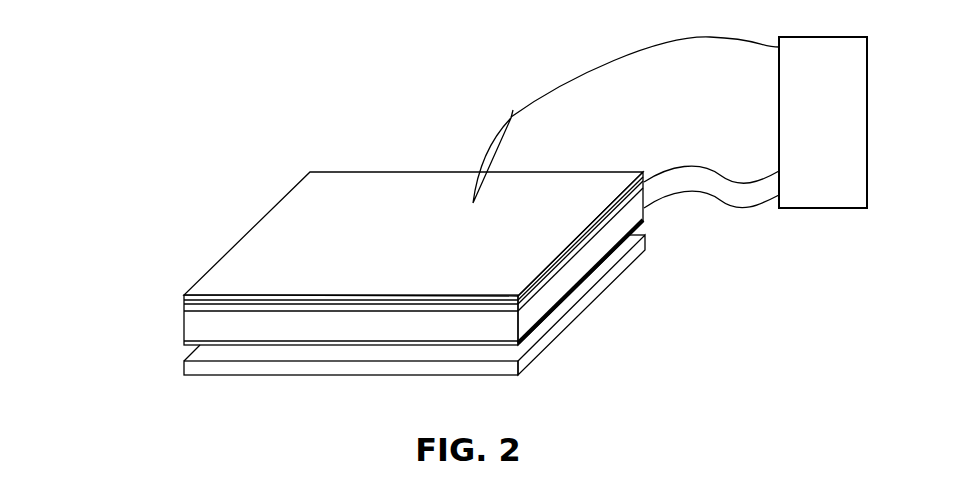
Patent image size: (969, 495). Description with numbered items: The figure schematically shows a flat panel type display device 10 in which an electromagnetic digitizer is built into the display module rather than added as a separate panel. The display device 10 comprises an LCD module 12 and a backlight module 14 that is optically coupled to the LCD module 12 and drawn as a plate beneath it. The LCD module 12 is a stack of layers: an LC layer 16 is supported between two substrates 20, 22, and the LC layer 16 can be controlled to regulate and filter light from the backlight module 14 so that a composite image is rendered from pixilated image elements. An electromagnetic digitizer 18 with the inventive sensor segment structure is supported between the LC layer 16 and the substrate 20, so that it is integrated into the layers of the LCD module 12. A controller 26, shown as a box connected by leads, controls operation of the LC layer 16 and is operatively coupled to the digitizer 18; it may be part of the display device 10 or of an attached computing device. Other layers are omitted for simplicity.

The display device 10 is at (338, 244).
The LCD module 12 is at (337, 272).
The backlight module 14 is at (186, 368).
The LC layer 16 is at (195, 329).
The electromagnetic digitizer 18 is at (185, 305).
The substrate 20 is at (184, 296).
The substrate 22 is at (85, 267).
The controller 26 is at (689, 122).